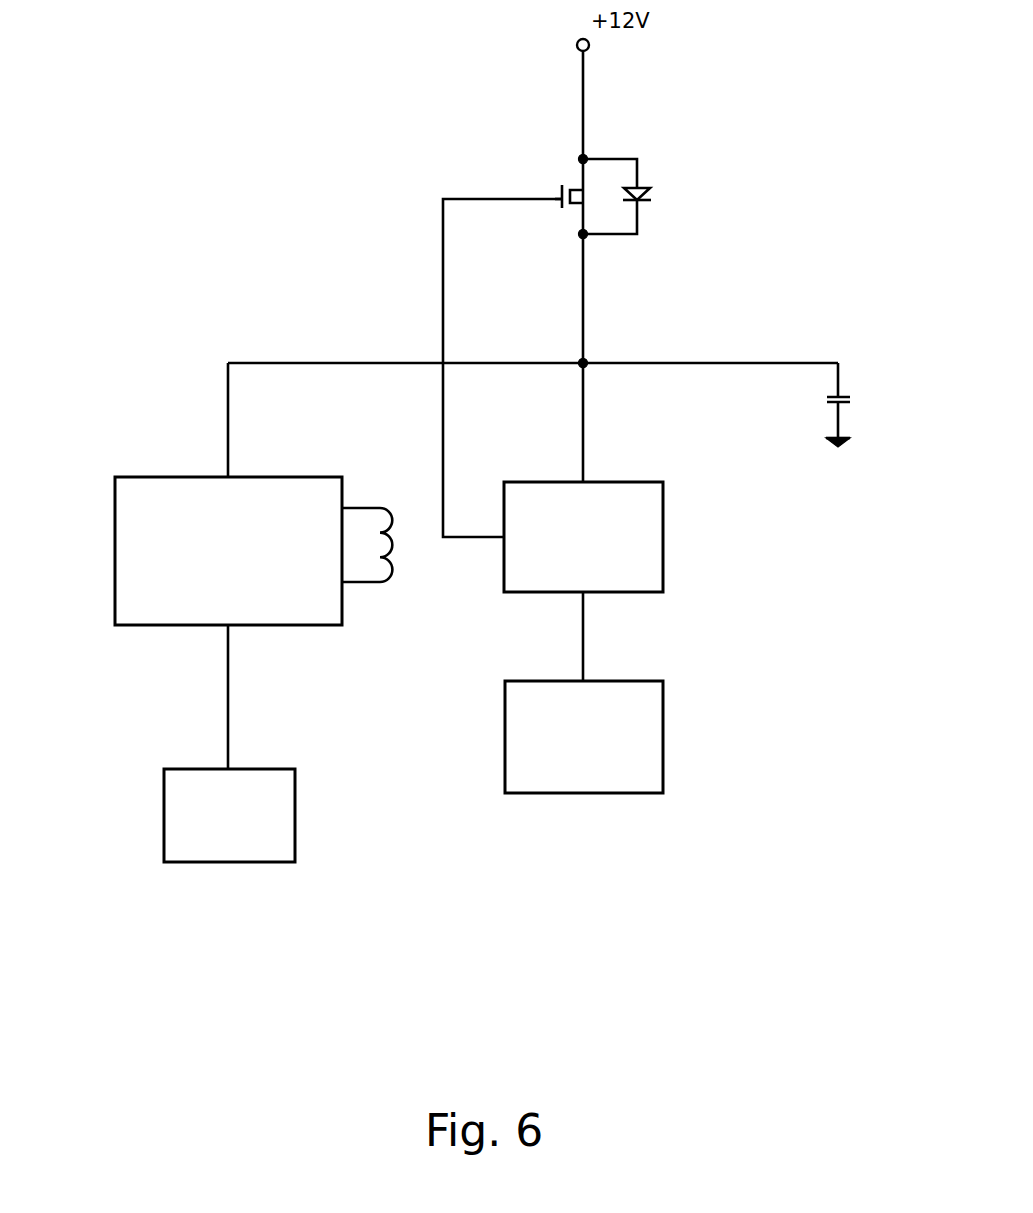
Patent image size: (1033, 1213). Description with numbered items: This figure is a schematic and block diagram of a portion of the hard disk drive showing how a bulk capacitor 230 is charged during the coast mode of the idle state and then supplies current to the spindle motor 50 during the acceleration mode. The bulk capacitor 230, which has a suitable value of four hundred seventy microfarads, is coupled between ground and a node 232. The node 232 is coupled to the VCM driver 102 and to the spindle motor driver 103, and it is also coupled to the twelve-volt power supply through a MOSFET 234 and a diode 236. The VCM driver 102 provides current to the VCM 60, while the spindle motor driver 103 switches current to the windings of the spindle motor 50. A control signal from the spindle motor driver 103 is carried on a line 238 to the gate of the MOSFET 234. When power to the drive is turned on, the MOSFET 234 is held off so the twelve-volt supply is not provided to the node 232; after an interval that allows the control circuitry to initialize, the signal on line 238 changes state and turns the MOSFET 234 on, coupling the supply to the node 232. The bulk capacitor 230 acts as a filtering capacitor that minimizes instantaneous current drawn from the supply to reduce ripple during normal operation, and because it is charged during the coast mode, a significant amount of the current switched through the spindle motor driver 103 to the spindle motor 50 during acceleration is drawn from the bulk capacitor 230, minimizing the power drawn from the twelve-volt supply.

The MOSFET 234 is at (562, 191).
The diode 236 is at (658, 169).
The node 232 is at (585, 362).
The bulk capacitor 230 is at (845, 395).
The line 238 is at (441, 455).
The VCM driver 102 is at (113, 559).
The spindle motor driver 103 is at (665, 538).
The spindle motor 50 is at (665, 742).
The VCM 60 is at (298, 818).